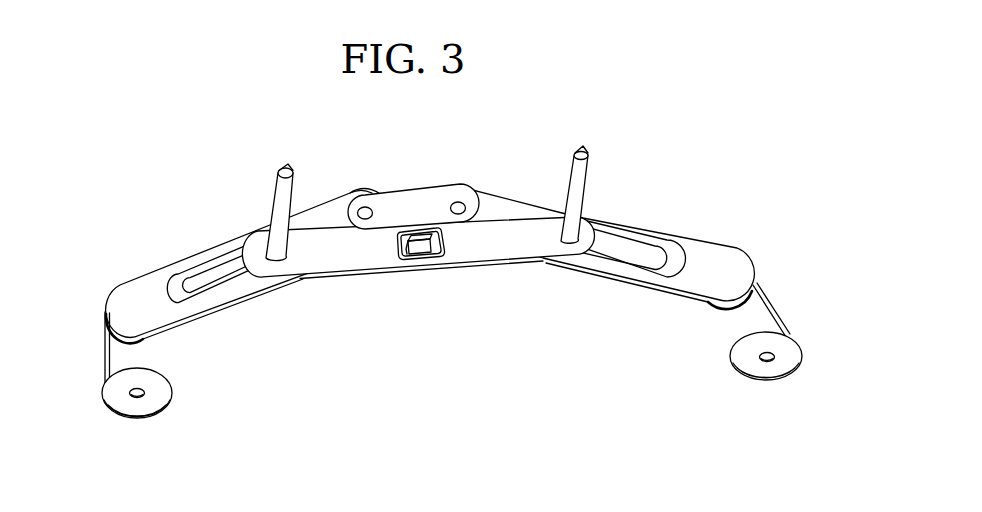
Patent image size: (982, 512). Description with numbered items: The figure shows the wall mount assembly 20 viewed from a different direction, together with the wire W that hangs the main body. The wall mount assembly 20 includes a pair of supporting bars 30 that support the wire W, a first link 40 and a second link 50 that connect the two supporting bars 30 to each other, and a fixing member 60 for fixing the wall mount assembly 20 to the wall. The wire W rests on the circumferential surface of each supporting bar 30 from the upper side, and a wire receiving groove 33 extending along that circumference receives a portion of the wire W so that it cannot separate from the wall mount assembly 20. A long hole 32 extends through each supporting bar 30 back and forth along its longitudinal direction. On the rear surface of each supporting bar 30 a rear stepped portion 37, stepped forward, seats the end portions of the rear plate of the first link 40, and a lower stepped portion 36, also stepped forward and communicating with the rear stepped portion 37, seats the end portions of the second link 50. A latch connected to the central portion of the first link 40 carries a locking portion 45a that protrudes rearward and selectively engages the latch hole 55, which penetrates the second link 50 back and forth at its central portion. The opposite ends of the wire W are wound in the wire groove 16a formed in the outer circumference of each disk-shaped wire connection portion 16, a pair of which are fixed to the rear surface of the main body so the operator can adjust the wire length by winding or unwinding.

The wall mount assembly 20 is at (430, 280).
The supporting bar 30 is at (249, 295).
The long hole 32 is at (223, 266).
The wire receiving groove 33 is at (156, 341).
The lower stepped portion 36 is at (197, 273).
The rear stepped portion 37 is at (343, 191).
The first link 40 is at (408, 190).
The locking portion 45a is at (423, 249).
The second link 50 is at (503, 263).
The latch hole 55 is at (444, 252).
The fixing member 60 is at (269, 172).
The wire W is at (105, 349).
The wire connection portion 16 is at (116, 419).
The wire groove 16a is at (145, 424).